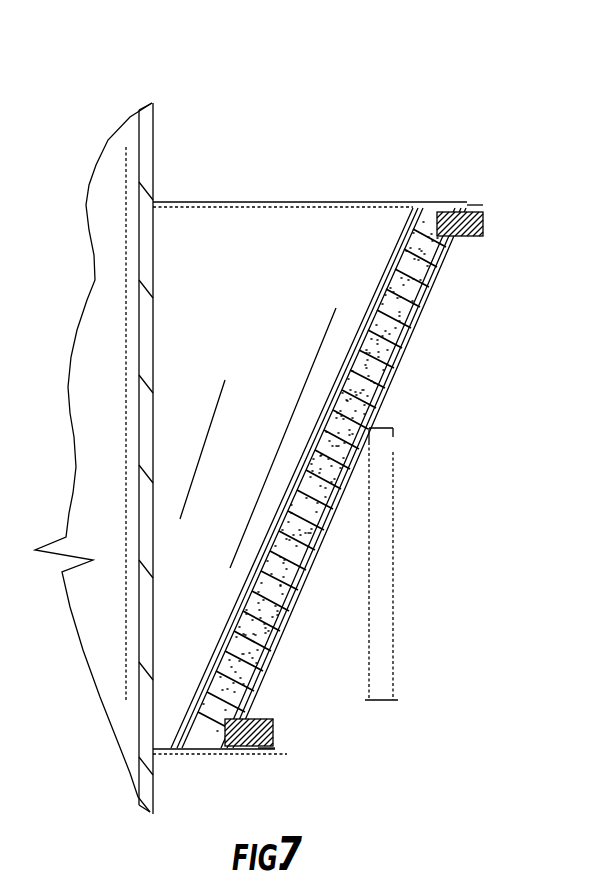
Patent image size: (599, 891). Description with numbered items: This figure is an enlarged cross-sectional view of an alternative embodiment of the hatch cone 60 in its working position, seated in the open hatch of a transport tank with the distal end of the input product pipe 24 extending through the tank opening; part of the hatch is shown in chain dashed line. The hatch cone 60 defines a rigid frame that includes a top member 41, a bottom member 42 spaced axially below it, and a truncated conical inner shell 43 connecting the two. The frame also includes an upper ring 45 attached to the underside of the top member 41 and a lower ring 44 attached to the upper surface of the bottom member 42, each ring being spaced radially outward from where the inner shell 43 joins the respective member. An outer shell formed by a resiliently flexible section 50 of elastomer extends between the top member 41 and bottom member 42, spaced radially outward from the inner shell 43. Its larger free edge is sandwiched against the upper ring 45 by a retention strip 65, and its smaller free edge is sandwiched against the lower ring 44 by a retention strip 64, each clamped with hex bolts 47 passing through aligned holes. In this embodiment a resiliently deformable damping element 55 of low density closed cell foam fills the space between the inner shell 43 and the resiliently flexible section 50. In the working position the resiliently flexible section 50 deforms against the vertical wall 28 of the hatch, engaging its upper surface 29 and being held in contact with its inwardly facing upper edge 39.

The hatch cone 60 is at (307, 132).
The input product pipe 24 is at (160, 352).
The top member 41 is at (215, 200).
The bottom member 42 is at (164, 758).
The upper ring 45 is at (447, 274).
The lower ring 44 is at (278, 655).
The upper surface 29 is at (371, 430).
The resiliently deformable damping element 55 is at (345, 383).
The inner shell 43 is at (242, 547).
The inwardly facing upper edge 39 is at (399, 452).
The vertical wall 28 is at (395, 575).
The hex bolt 47 is at (485, 221).
The resiliently flexible section 50 is at (465, 205).
The retention strip 65 is at (477, 207).
The retention strip 64 is at (268, 750).